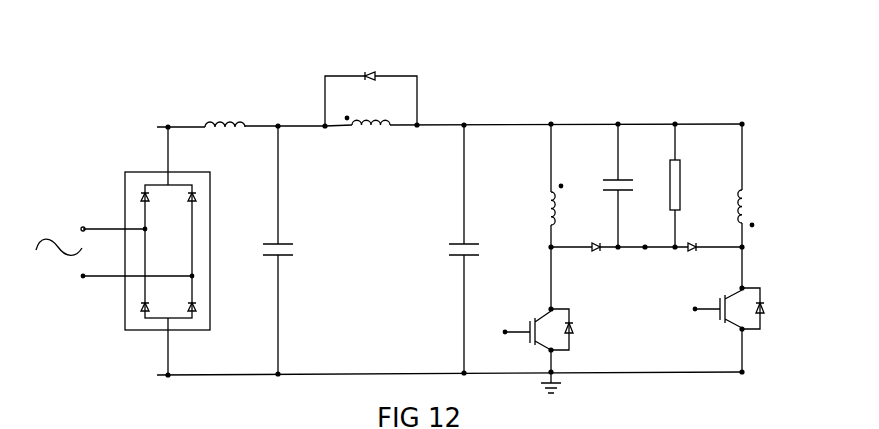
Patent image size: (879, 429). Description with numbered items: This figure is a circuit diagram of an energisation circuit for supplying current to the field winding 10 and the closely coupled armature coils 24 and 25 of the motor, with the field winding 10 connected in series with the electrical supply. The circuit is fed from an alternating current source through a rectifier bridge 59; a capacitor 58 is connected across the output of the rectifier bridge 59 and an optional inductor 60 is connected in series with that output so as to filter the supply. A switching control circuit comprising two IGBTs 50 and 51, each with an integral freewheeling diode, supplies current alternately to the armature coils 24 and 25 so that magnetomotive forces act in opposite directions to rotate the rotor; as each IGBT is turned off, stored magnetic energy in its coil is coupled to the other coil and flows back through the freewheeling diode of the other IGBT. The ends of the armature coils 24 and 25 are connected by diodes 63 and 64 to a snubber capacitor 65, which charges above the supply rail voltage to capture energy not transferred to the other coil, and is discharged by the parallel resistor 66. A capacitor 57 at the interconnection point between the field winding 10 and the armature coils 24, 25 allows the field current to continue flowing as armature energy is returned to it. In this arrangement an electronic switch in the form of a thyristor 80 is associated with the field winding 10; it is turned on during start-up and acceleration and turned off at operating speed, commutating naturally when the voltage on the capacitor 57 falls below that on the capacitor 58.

The field winding 10 is at (366, 130).
The armature coil 24 is at (548, 212).
The armature coil 25 is at (745, 197).
The IGBT 50 is at (528, 323).
The IGBT 51 is at (718, 317).
The capacitor 57 is at (458, 258).
The capacitor 58 is at (283, 258).
The rectifier bridge 59 is at (125, 207).
The inductor 60 is at (211, 122).
The diode 63 is at (598, 252).
The diode 64 is at (694, 252).
The snubber capacitor 65 is at (607, 180).
The parallel resistor 66 is at (683, 190).
The thyristor 80 is at (370, 73).